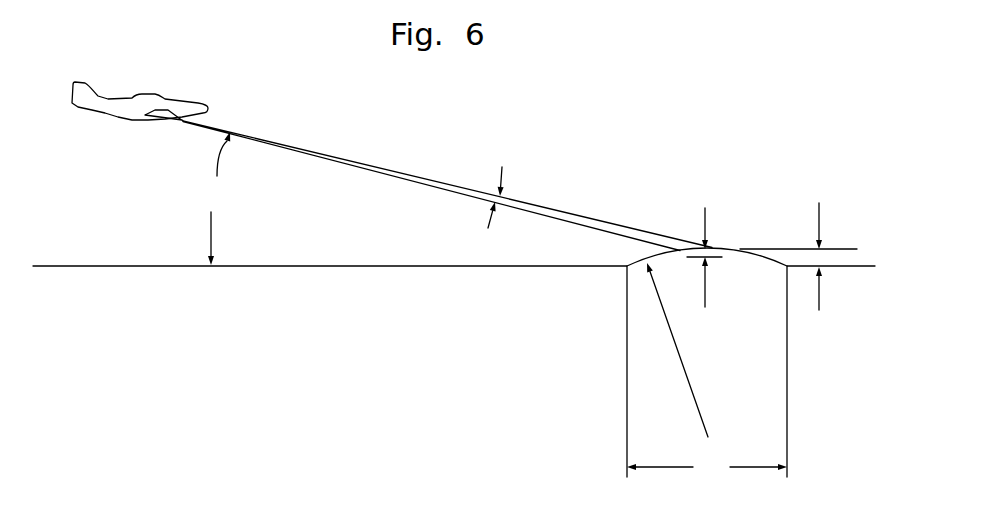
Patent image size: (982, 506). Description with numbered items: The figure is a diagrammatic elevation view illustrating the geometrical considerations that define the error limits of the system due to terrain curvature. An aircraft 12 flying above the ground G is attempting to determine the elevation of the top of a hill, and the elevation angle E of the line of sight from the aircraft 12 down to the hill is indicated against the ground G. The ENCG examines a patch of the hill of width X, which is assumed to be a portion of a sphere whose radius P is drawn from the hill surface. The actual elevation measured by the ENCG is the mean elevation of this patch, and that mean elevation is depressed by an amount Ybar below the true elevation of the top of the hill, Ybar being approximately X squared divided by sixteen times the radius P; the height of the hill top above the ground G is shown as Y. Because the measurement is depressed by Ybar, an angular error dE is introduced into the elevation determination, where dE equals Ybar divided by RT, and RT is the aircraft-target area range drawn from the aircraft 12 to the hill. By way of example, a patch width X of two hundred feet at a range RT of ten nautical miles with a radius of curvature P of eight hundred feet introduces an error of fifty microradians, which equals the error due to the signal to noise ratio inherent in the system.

The aircraft 12 is at (178, 107).
The ground G is at (110, 266).
The aircraft-target area range RT is at (447, 186).
The elevation angle E is at (218, 198).
The angular error dE is at (500, 187).
The depression of mean elevation below true elevation Ybar is at (698, 183).
The terrain height Y is at (818, 246).
The radius of the sphere P is at (677, 350).
The width of the patch X is at (707, 471).